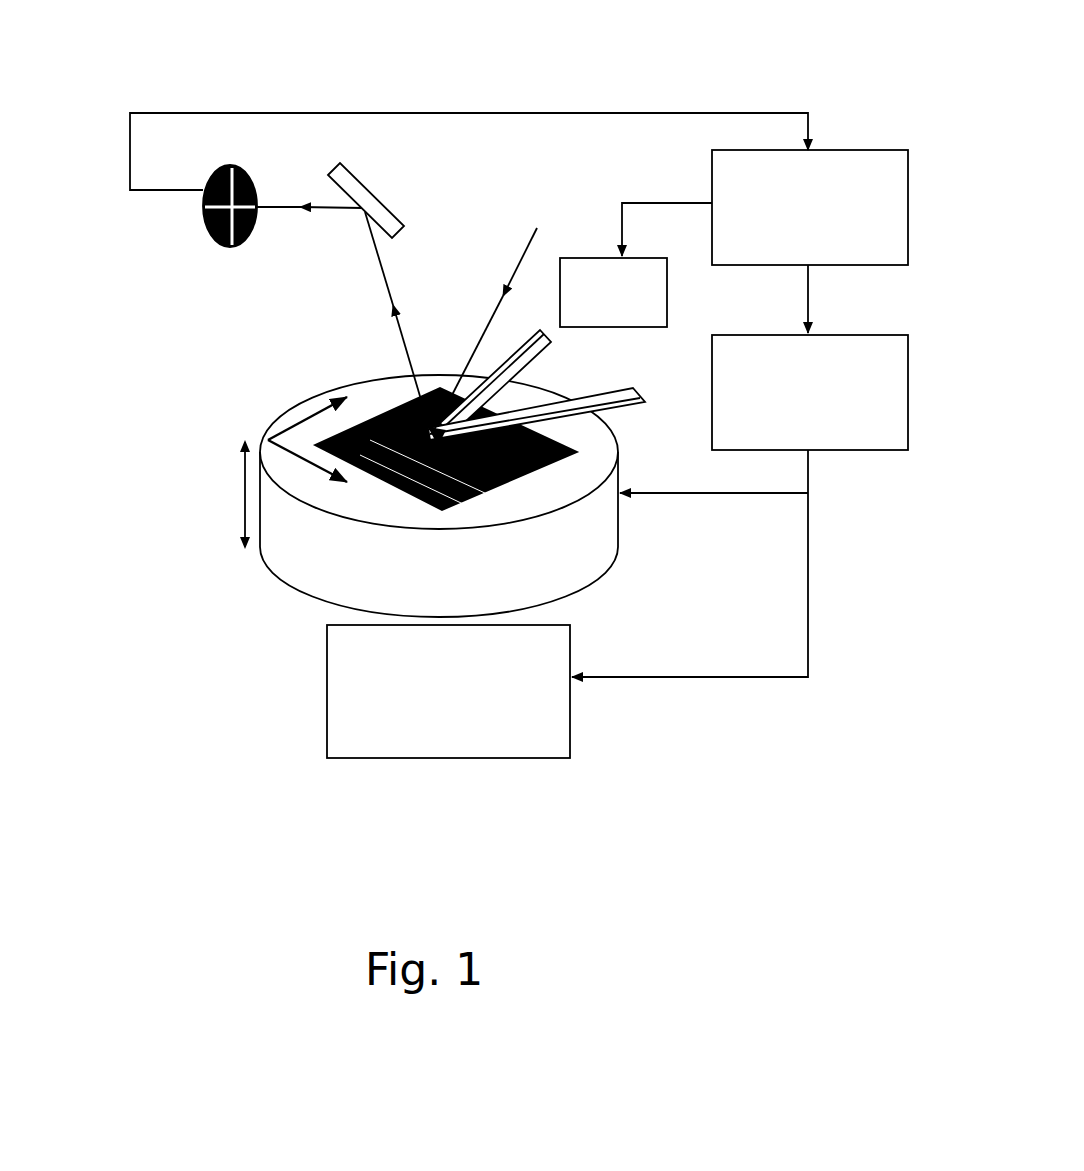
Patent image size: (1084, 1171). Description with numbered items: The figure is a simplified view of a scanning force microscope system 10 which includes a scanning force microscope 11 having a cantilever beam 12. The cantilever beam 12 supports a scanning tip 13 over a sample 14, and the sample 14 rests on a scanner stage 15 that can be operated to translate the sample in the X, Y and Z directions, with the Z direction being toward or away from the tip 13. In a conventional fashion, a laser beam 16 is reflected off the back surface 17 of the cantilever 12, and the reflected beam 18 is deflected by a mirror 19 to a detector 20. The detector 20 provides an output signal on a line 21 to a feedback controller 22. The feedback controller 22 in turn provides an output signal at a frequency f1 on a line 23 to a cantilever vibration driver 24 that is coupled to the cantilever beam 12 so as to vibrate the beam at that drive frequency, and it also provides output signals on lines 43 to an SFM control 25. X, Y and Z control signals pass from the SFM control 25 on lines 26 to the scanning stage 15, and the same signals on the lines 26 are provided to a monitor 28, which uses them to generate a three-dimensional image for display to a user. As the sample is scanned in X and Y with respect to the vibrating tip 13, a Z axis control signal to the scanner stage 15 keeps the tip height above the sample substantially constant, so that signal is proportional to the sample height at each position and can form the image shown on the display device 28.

The scanning force microscope system 10 is at (463, 80).
The scanning force microscope 11 is at (175, 422).
The cantilever beam 12 is at (468, 416).
The scanning tip 13 is at (555, 452).
The sample 14 is at (490, 488).
The scanner stage 15 is at (590, 570).
The laser beam 16 is at (525, 250).
The back surface of the cantilever 17 is at (442, 385).
The reflected beam 18 is at (383, 267).
The mirror 19 is at (360, 178).
The detector 20 is at (248, 187).
The line 21 is at (580, 112).
The feedback controller 22 is at (833, 147).
The line 23 is at (676, 203).
The cantilever vibration driver 24 is at (600, 265).
The SFM control 25 is at (835, 330).
The lines 26 is at (812, 475).
The monitor 28 is at (570, 728).
The lines 43 is at (810, 290).